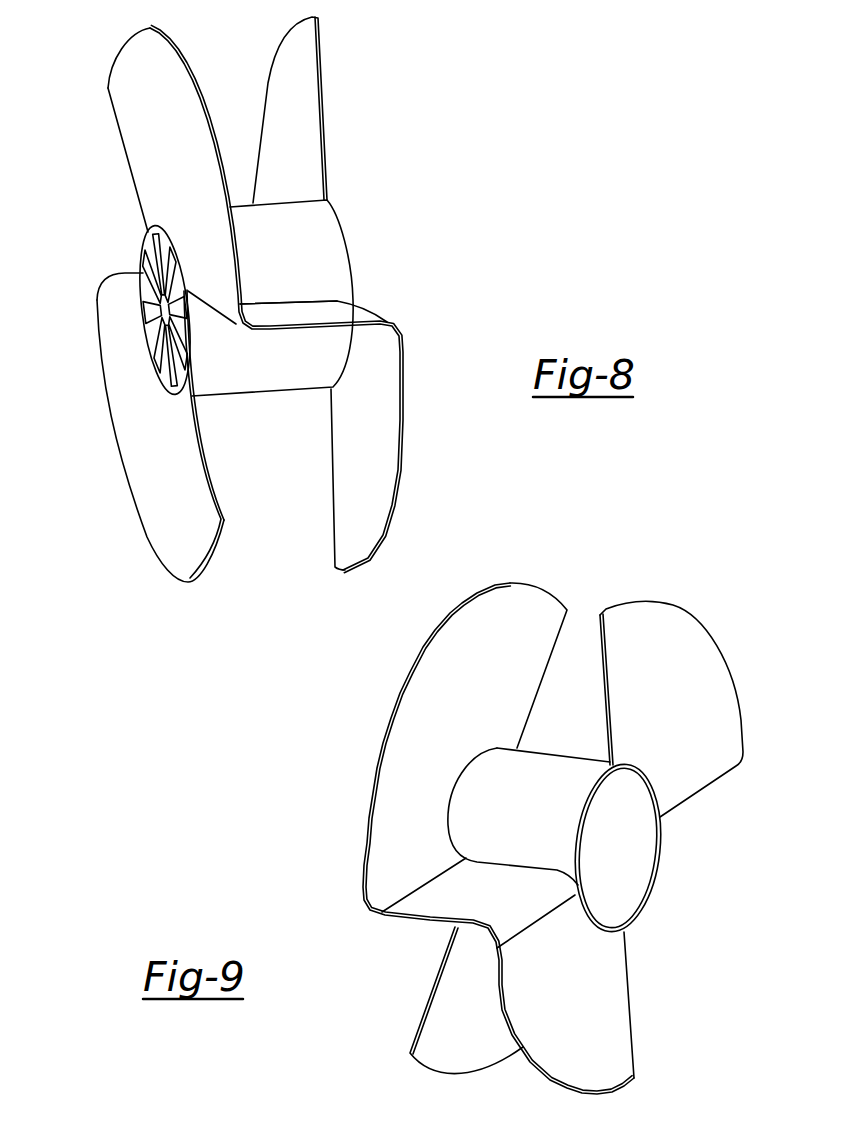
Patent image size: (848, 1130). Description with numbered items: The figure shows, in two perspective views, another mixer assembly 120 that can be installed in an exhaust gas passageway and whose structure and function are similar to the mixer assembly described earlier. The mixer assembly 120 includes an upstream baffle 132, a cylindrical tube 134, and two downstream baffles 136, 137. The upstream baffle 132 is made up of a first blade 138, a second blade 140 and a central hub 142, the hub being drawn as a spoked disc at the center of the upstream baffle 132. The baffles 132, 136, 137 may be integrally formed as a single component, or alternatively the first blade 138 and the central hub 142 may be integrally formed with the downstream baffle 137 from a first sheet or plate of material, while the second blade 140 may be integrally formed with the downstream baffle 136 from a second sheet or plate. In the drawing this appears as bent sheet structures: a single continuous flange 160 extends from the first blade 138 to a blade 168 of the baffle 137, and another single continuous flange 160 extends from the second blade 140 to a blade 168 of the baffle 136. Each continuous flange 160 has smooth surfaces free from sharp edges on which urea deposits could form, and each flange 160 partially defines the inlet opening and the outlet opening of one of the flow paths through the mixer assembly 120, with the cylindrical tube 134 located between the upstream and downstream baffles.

In FIG. 8, the mixer assembly 120 is at (422, 108).
In FIG. 9, the mixer assembly 120 is at (605, 545).
In FIG. 8, the upstream baffle 132 is at (123, 50).
In FIG. 9, the upstream baffle 132 is at (488, 585).
In FIG. 8, the cylindrical tube 134 is at (310, 232).
In FIG. 9, the cylindrical tube 134 is at (620, 878).
In FIG. 8, the downstream baffle 136 is at (303, 62).
In FIG. 9, the downstream baffle 136 is at (650, 613).
In FIG. 8, the downstream baffle 137 is at (357, 468).
In FIG. 9, the downstream baffle 137 is at (610, 1073).
In FIG. 8, the first blade 138 is at (160, 82).
In FIG. 9, the first blade 138 is at (537, 598).
In FIG. 8, the second blade 140 is at (170, 533).
In FIG. 9, the second blade 140 is at (453, 1053).
In FIG. 8, the central hub 142 is at (162, 317).
In FIG. 8, the continuous flange 160 is at (134, 272).
In FIG. 9, the continuous flange 160 is at (478, 890).
In FIG. 9, the blade 168 is at (700, 718).